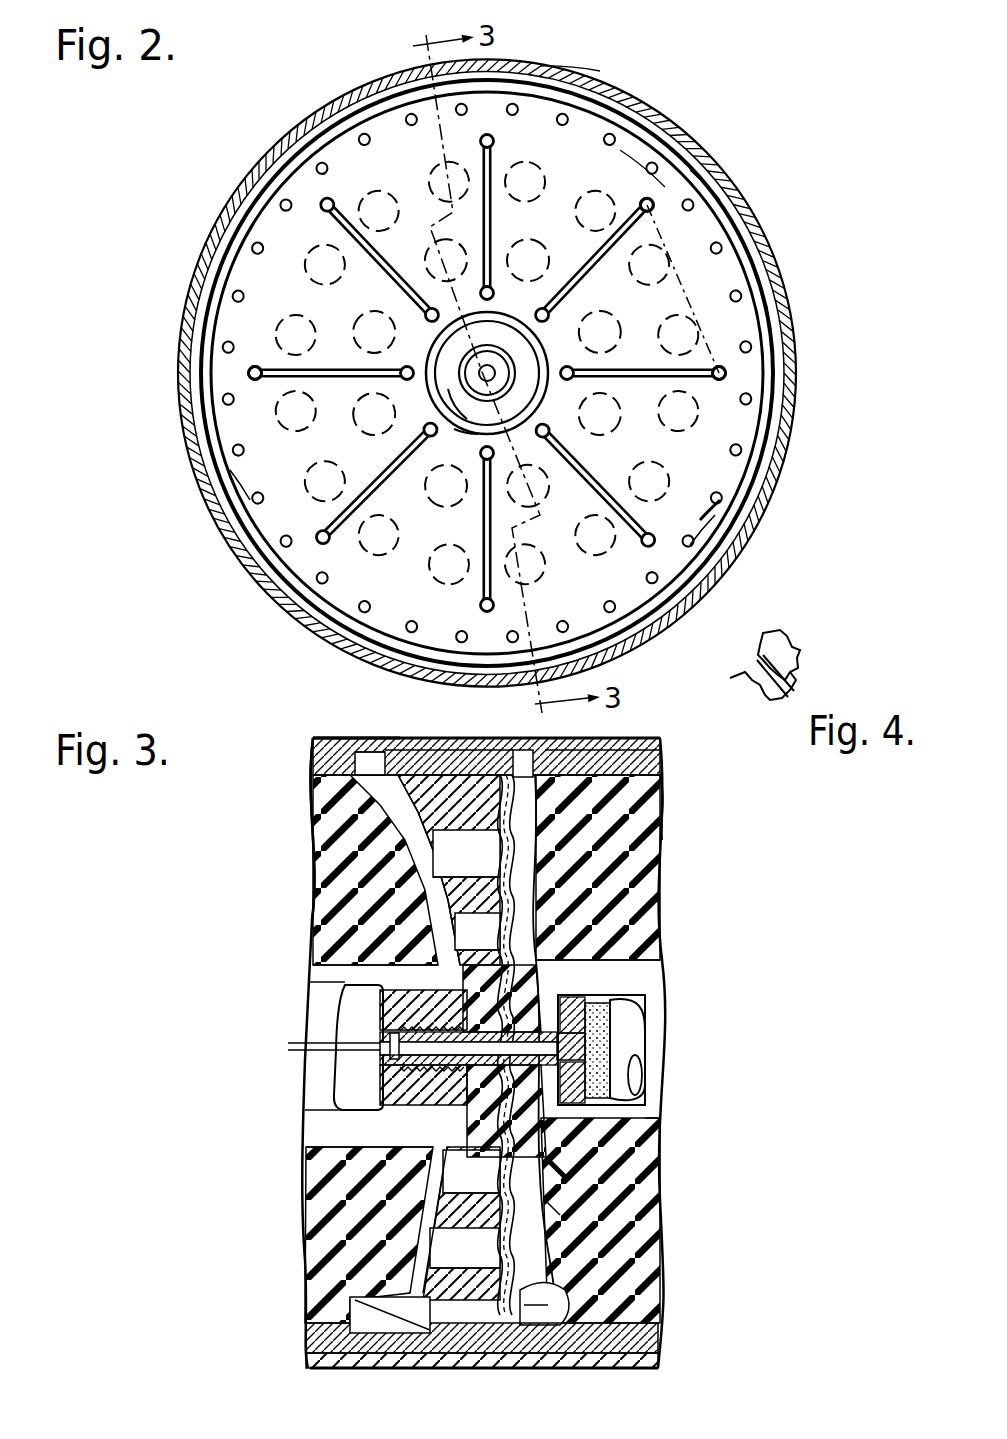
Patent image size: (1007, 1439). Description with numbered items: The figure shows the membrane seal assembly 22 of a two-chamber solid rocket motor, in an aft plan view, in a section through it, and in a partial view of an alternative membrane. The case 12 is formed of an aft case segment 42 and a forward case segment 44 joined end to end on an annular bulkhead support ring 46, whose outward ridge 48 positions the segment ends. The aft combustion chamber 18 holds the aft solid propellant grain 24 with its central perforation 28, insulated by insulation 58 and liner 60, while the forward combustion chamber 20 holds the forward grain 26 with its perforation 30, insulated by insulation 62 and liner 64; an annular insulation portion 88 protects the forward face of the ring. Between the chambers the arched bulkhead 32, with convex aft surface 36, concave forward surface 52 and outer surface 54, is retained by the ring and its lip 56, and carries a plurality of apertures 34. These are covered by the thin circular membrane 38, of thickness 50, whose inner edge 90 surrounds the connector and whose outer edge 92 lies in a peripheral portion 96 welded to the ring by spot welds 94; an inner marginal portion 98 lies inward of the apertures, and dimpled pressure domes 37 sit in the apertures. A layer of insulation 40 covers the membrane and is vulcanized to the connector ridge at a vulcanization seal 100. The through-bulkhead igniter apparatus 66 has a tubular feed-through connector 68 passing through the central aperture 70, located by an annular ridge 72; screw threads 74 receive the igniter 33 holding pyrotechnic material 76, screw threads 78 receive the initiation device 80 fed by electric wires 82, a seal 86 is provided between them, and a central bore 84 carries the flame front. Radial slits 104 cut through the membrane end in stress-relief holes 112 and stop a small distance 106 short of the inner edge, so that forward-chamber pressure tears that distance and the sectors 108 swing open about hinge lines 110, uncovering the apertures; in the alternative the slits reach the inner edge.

In FIG. 2, the case 12 is at (705, 150).
In FIG. 3, the case 12 is at (322, 736).
In FIG. 3, the aft combustion chamber 18 is at (662, 1133).
In FIG. 3, the forward combustion chamber 20 is at (306, 1118).
In FIG. 2, the membrane seal assembly 22 is at (614, 91).
In FIG. 3, the membrane seal assembly 22 is at (662, 820).
In FIG. 3, the aft solid propellant grain 24 is at (662, 855).
In FIG. 3, the forward solid propellant grain 26 is at (313, 855).
In FIG. 3, the central axial perforation 28 is at (662, 965).
In FIG. 3, the central axial perforation 30 is at (308, 978).
In FIG. 3, the bulkhead 32 is at (440, 1215).
In FIG. 3, the igniter 33 is at (645, 1000).
In FIG. 2, the apertures 34 is at (434, 164).
In FIG. 3, the apertures 34 is at (490, 840).
In FIG. 3, the aft surface 36 is at (548, 1210).
In FIG. 3, the pressure domes 37 is at (500, 860).
In FIG. 2, the membrane 38 is at (650, 311).
In FIG. 4, the membrane 38 is at (800, 648).
In FIG. 3, the membrane 38 is at (558, 1170).
In FIG. 3, the insulation layer 40 is at (532, 1290).
In FIG. 2, the aft case segment 42 is at (560, 68).
In FIG. 3, the aft case segment 42 is at (640, 738).
In FIG. 3, the forward case segment 44 is at (313, 745).
In FIG. 3, the bulkhead support ring 46 is at (430, 748).
In FIG. 3, the ridge 48 is at (442, 738).
In FIG. 3, the membrane thickness 50 is at (478, 893).
In FIG. 3, the forward surface 52 is at (433, 1140).
In FIG. 3, the radially outer surface 54 is at (420, 1368).
In FIG. 3, the lip 56 is at (532, 1310).
In FIG. 3, the insulation 58 is at (660, 752).
In FIG. 3, the liner 60 is at (660, 775).
In FIG. 3, the insulation 62 is at (355, 758).
In FIG. 3, the liner 64 is at (355, 775).
In FIG. 3, the through-bulkhead igniter apparatus 66 is at (650, 1040).
In FIG. 2, the tubular feed-through connector 68 is at (560, 430).
In FIG. 3, the tubular feed-through connector 68 is at (546, 1130).
In FIG. 3, the central aperture 70 is at (465, 985).
In FIG. 2, the annular ridge 72 is at (548, 385).
In FIG. 3, the annular ridge 72 is at (548, 990).
In FIG. 2, the screw threads 74 is at (543, 360).
In FIG. 3, the screw threads 74 is at (642, 1078).
In FIG. 3, the pyrotechnic material 76 is at (610, 1045).
In FIG. 3, the screw threads 78 is at (390, 1060).
In FIG. 3, the initiation device 80 is at (335, 1000).
In FIG. 3, the electric wires 82 is at (288, 1040).
In FIG. 2, the central longitudinal bore 84 is at (478, 375).
In FIG. 3, the central longitudinal bore 84 is at (490, 1100).
In FIG. 3, the seal 86 is at (420, 990).
In FIG. 3, the annular insulation portion 88 is at (370, 750).
In FIG. 2, the inner edge 90 is at (510, 322).
In FIG. 4, the inner edge 90 is at (765, 633).
In FIG. 2, the outer edge 92 is at (655, 130).
In FIG. 2, the spot or stitch welds 94 is at (360, 140).
In FIG. 2, the peripheral portion 96 is at (720, 512).
In FIG. 3, the peripheral portion 96 is at (525, 750).
In FIG. 2, the inner marginal portion 98 is at (468, 414).
In FIG. 3, the inner marginal portion 98 is at (553, 1045).
In FIG. 3, the vulcanization seal 100 is at (585, 1105).
In FIG. 2, the slits 104 is at (492, 212).
In FIG. 4, the slits 104 is at (792, 680).
In FIG. 2, the distance 106 is at (472, 460).
In FIG. 2, the sectors 108 is at (722, 510).
In FIG. 2, the hinge lines 110 is at (698, 290).
In FIG. 2, the stress-relief holes 112 is at (654, 204).